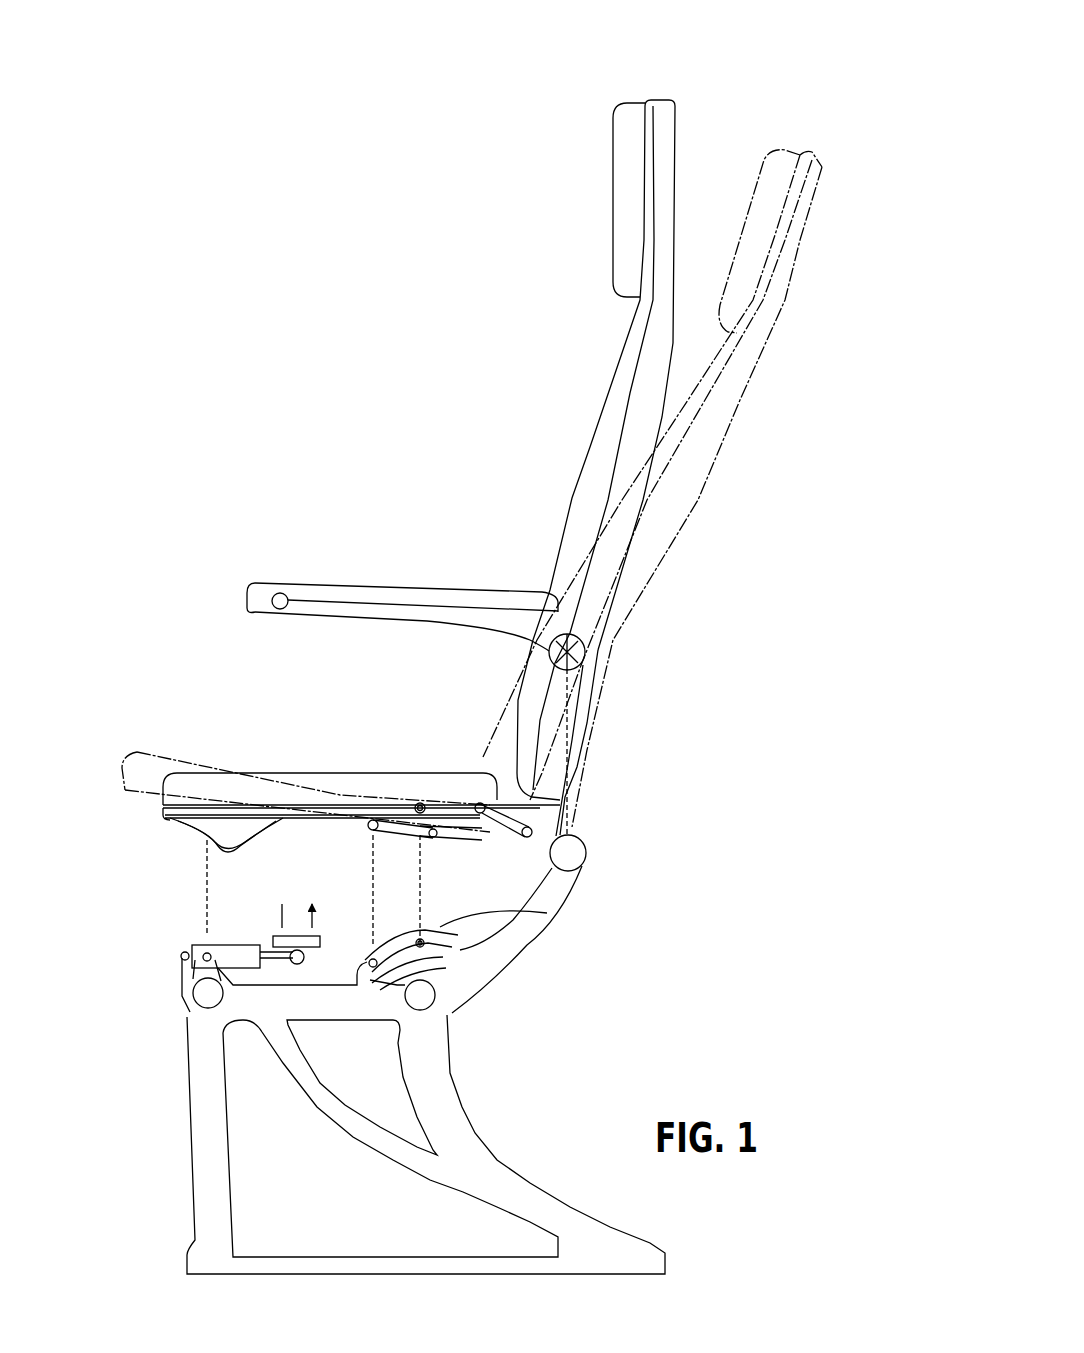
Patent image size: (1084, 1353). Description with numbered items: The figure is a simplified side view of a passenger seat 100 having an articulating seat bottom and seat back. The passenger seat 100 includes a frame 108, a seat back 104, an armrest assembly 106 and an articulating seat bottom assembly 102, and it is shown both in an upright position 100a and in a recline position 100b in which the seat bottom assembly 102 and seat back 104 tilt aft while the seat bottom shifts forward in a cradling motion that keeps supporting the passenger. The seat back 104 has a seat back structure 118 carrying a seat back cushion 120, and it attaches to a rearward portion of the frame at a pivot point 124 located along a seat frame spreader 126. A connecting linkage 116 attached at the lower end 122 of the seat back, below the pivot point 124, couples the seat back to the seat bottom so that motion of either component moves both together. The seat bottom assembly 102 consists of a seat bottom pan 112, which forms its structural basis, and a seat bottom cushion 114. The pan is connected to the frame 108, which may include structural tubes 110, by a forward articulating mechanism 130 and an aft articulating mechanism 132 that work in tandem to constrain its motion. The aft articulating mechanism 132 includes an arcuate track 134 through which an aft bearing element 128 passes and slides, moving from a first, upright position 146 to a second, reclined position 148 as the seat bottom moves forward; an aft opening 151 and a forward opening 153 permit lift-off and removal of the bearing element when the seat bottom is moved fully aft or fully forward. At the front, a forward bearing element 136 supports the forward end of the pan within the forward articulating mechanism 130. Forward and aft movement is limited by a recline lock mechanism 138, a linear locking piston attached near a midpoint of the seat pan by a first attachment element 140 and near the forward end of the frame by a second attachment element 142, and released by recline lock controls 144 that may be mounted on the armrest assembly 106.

The passenger seat 100 is at (762, 72).
The upright position 100a is at (618, 98).
The recline position 100b is at (685, 147).
The articulating seat bottom assembly 102 is at (327, 745).
The seat back 104 is at (758, 391).
The armrest assembly 106 is at (405, 575).
The frame 108 is at (474, 1109).
The structural tubes 110 is at (187, 1015).
The seat bottom pan 112 is at (293, 820).
The seat bottom cushion 114 is at (360, 770).
The connecting linkage 116 is at (555, 805).
The seat back structure 118 is at (588, 730).
The seat back cushion 120 is at (602, 393).
The lower end 122 is at (587, 820).
The pivot point 124 is at (586, 658).
The seat frame spreader 126 is at (527, 945).
The aft bearing element 128 is at (405, 793).
The forward articulating mechanism 130 is at (207, 858).
The aft articulating mechanism 132 is at (448, 920).
The arcuate track 134 is at (407, 850).
The forward bearing element 136 is at (205, 955).
The recline lock mechanism 138 is at (232, 923).
The first attachment element 140 is at (323, 947).
The second attachment element 142 is at (183, 958).
The recline lock controls 144 is at (280, 593).
The first, upright position 146 is at (422, 800).
The second, reclined position 148 is at (365, 831).
The aft opening 151 is at (547, 913).
The forward opening 153 is at (357, 960).